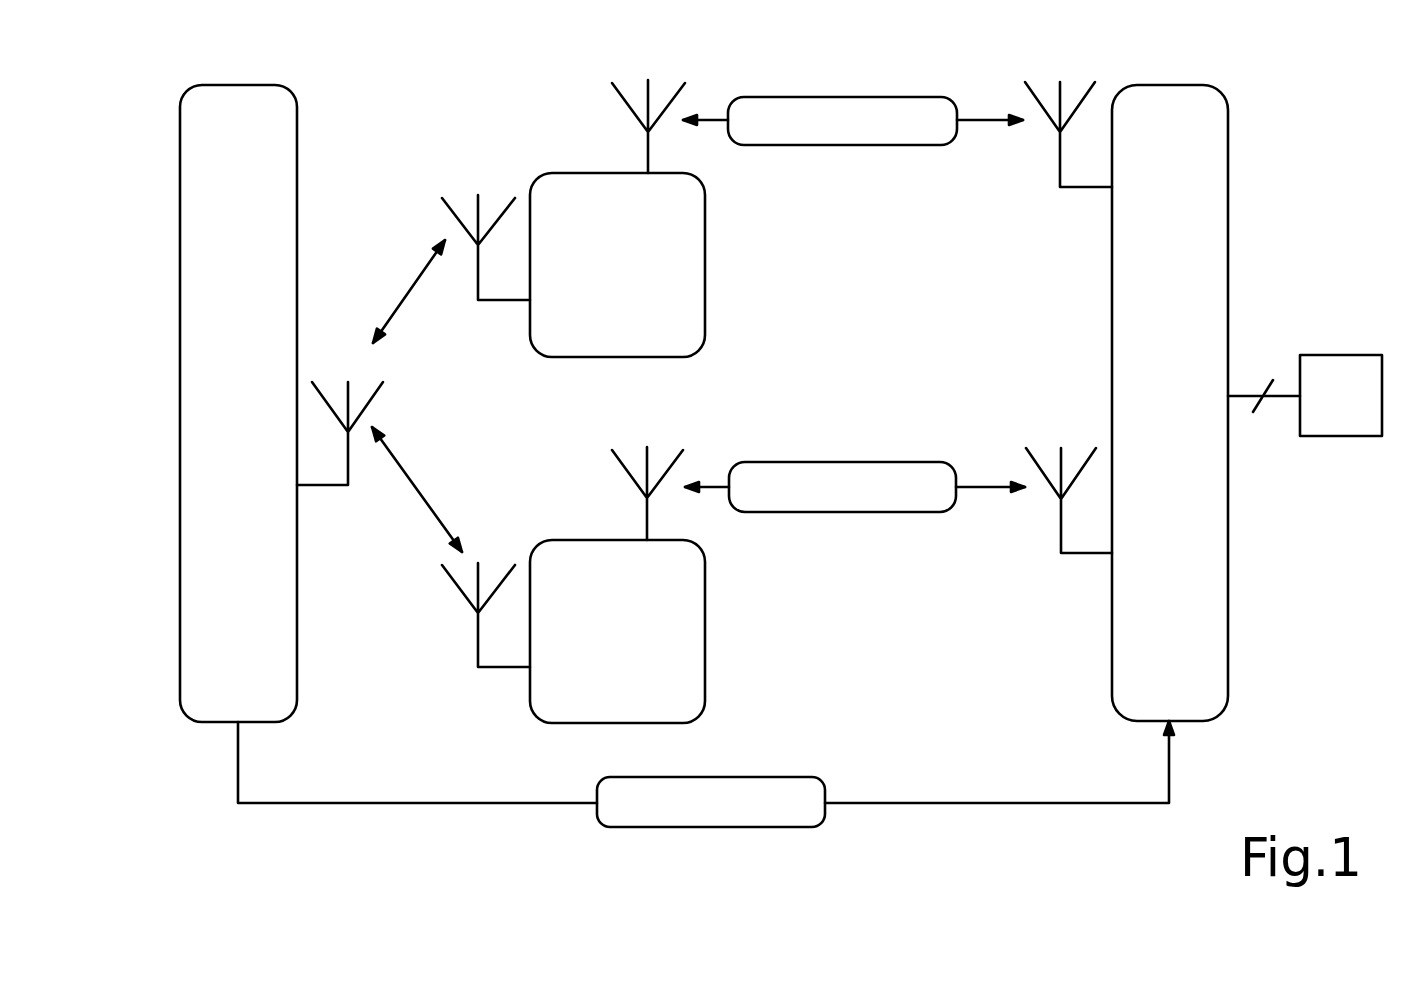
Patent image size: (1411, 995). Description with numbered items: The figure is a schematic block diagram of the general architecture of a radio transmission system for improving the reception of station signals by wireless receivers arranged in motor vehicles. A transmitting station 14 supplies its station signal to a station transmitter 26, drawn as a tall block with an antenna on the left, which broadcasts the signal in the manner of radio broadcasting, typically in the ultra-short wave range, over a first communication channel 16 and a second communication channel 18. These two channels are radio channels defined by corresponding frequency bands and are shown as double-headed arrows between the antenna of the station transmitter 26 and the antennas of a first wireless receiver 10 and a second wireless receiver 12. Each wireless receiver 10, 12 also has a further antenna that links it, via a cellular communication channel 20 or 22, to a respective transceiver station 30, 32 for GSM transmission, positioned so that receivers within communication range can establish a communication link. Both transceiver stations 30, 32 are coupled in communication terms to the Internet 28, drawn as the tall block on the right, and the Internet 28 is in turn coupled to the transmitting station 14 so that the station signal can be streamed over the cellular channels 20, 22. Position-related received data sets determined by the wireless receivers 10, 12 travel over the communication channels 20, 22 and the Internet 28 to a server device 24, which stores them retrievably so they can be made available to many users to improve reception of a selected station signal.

The wireless receiver 10 is at (705, 237).
The wireless receiver 12 is at (705, 608).
The transmitting station 14 is at (780, 777).
The communication channel 16 is at (400, 300).
The communication channel 18 is at (398, 467).
The communication channel 20 is at (825, 97).
The communication channel 22 is at (826, 462).
The server device 24 is at (1337, 355).
The station transmitter 26 is at (180, 290).
The Internet 28 is at (1228, 242).
The transceiver station 30 is at (1057, 103).
The transceiver station 32 is at (1060, 473).